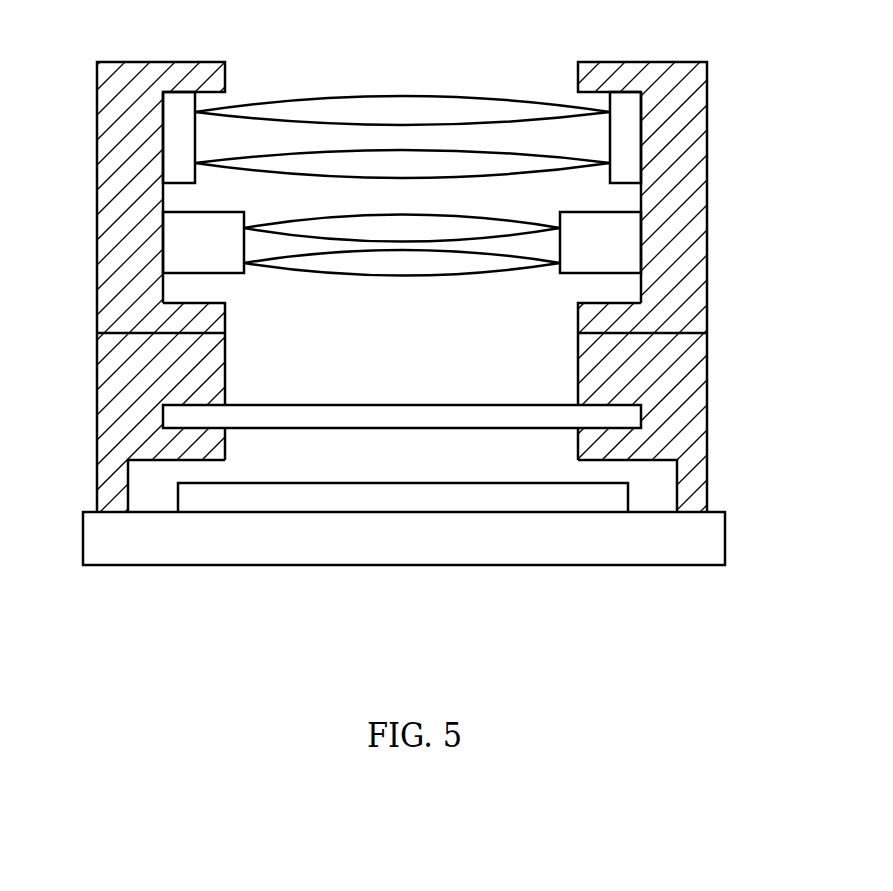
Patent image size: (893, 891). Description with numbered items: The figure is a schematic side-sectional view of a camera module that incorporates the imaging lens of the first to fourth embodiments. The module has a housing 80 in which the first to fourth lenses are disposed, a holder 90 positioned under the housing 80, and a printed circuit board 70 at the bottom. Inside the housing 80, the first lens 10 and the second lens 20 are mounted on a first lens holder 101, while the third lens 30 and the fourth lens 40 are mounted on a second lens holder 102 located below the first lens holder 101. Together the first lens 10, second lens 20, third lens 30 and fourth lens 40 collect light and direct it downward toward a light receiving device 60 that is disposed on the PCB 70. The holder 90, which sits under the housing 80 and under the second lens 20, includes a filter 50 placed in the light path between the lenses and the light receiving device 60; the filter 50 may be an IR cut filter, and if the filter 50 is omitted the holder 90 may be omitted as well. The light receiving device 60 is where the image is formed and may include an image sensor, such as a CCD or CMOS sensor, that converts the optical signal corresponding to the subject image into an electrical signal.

The first lens 10 is at (349, 105).
The second lens 20 is at (442, 160).
The third lens 30 is at (483, 216).
The fourth lens 40 is at (510, 268).
The filter 50 is at (635, 412).
The light receiving device 60 is at (338, 500).
The printed circuit board 70 is at (498, 555).
The housing 80 is at (693, 118).
The holder 90 is at (693, 365).
The first lens holder 101 is at (622, 98).
The second lens holder 102 is at (635, 240).